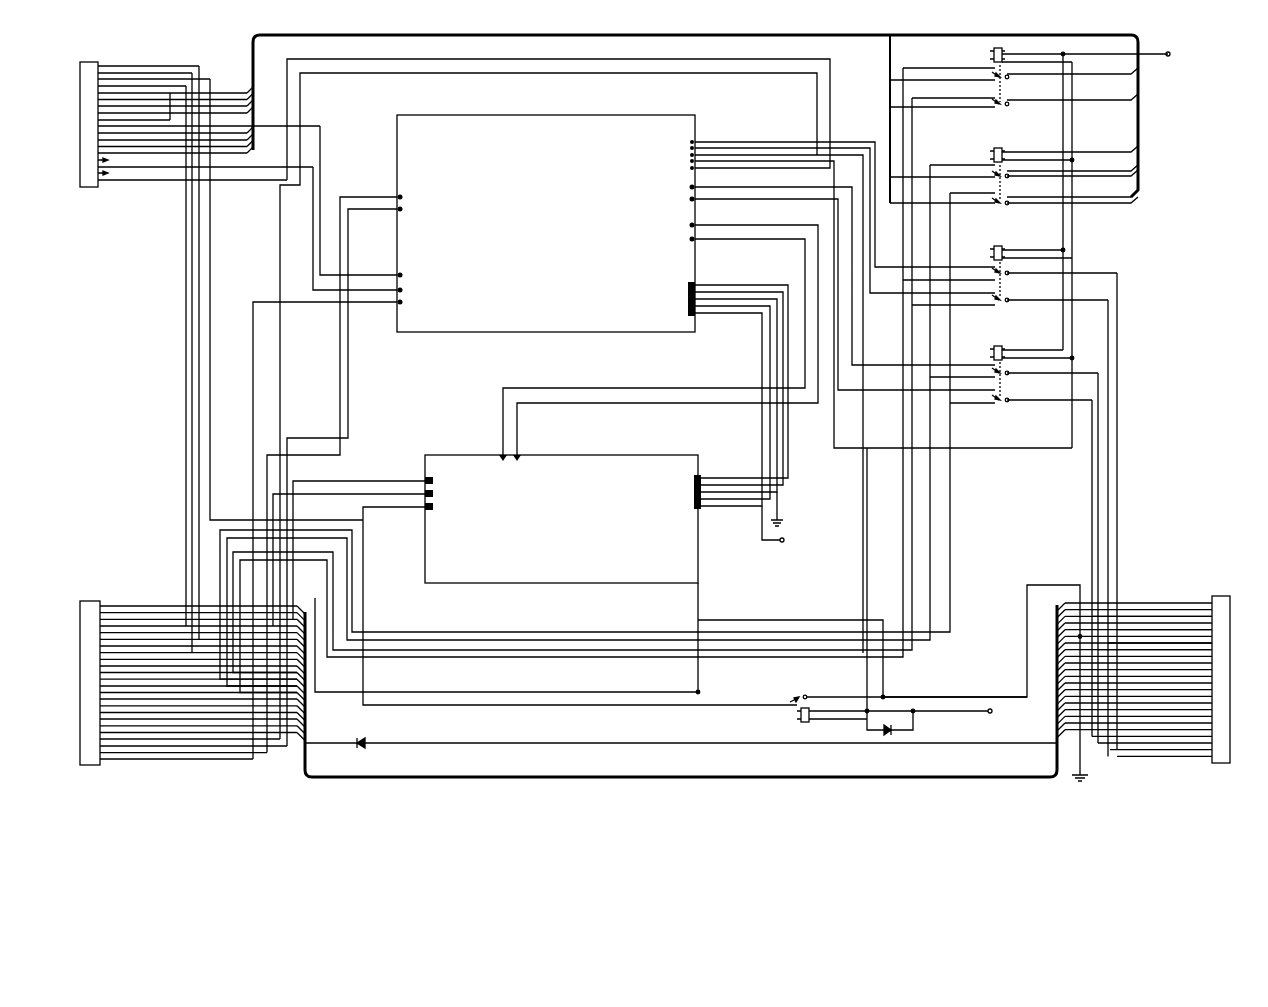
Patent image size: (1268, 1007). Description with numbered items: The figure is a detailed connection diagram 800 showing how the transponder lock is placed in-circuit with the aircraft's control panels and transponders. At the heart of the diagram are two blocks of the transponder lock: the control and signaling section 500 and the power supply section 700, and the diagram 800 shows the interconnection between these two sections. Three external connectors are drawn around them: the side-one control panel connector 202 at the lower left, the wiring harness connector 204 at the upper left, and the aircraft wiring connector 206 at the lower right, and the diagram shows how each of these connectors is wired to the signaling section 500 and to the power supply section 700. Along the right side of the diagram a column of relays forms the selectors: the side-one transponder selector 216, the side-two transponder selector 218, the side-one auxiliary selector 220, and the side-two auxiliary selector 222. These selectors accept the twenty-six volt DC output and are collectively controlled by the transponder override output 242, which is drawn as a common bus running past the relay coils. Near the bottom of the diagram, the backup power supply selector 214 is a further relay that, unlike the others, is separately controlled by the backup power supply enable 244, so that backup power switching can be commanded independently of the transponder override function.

The connection diagram 800 is at (565, 805).
The side-1 control panel connector 202 is at (100, 768).
The wiring harness connector 204 is at (100, 190).
The aircraft wiring connector 206 is at (1232, 768).
The backup power supply selector 214 is at (843, 684).
The side-1 transponder selector 216 is at (1058, 427).
The side-2 transponder selector 218 is at (1058, 230).
The side-1 auxiliary selector 220 is at (1058, 327).
The side-2 auxiliary selector 222 is at (1058, 128).
The transponder override output 242 is at (1072, 249).
The backup power supply enable 244 is at (867, 576).
The control and signaling section 500 is at (596, 316).
The power supply section 700 is at (666, 563).